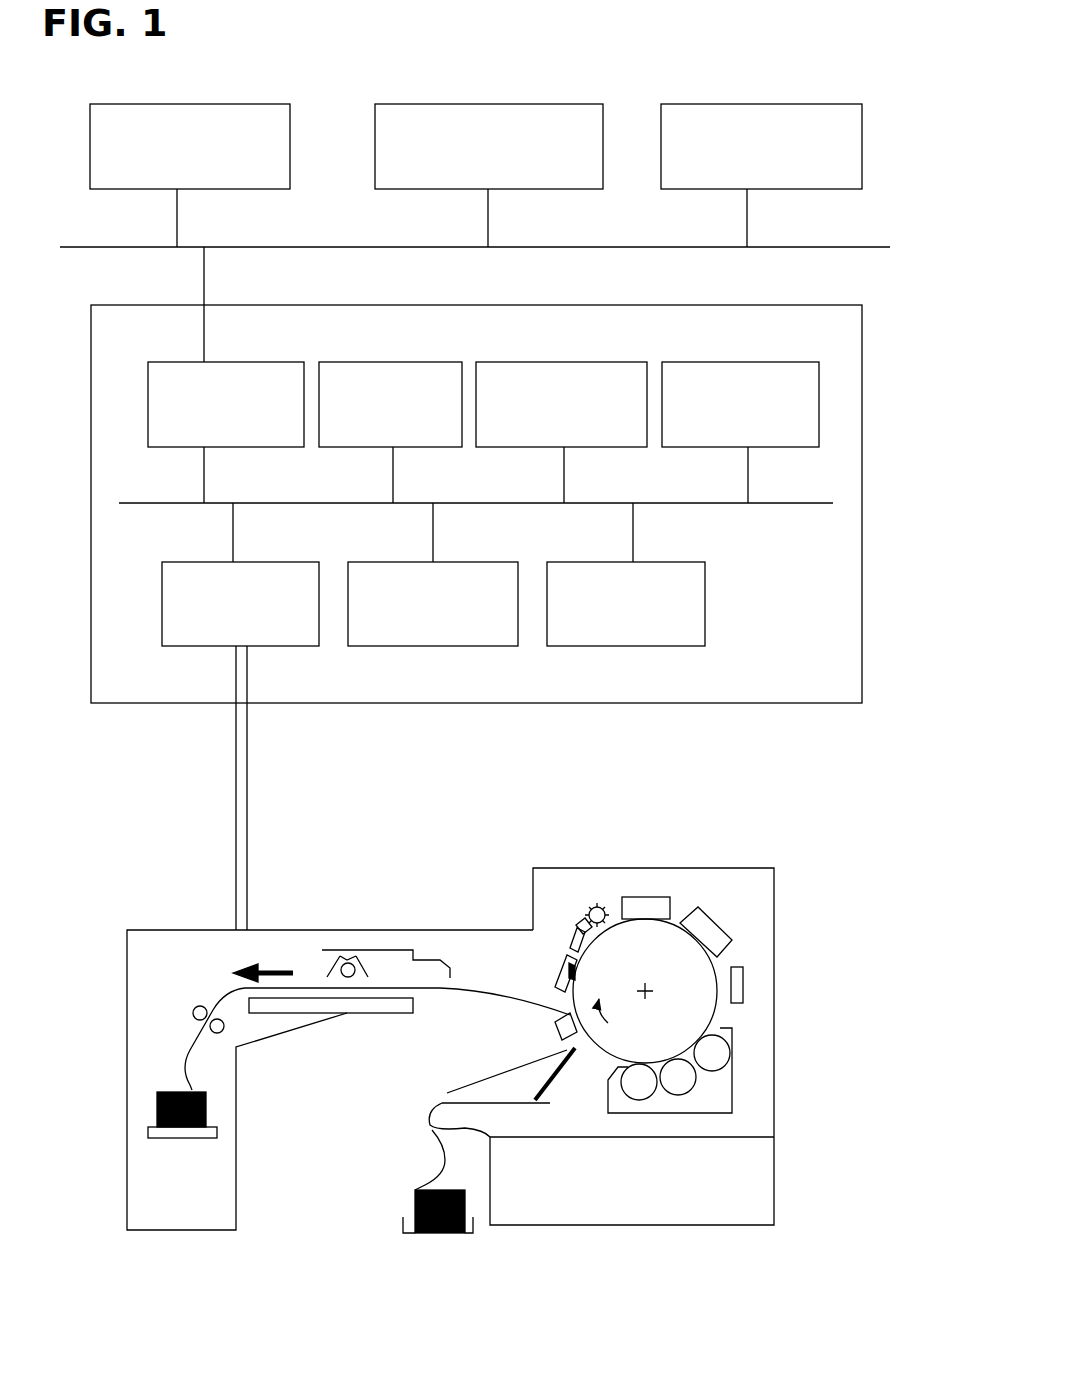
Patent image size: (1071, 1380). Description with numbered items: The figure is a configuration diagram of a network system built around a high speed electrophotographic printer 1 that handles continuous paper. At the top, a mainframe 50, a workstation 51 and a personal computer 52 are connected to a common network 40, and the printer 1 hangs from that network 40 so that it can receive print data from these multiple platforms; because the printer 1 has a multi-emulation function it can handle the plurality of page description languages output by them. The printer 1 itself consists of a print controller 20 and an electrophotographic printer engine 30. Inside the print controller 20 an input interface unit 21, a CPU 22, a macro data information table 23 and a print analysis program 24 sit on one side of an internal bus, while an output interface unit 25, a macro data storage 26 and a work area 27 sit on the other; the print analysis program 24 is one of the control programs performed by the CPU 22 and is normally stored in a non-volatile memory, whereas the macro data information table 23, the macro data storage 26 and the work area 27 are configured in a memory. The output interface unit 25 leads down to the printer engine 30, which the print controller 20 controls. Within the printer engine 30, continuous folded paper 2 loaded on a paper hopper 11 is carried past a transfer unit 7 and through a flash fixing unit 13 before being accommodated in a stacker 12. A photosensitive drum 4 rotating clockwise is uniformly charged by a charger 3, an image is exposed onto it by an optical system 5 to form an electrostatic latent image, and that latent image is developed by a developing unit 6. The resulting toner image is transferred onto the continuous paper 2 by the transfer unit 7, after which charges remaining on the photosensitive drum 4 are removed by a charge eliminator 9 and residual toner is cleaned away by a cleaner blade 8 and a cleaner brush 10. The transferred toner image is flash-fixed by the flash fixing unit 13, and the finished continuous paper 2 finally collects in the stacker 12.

The electrophotographic printer 1 is at (890, 318).
The continuous paper 2 is at (431, 1133).
The charger 3 is at (645, 951).
The photosensitive drum 4 is at (705, 901).
The optical system 5 is at (740, 964).
The developing unit 6 is at (736, 1059).
The transfer unit 7 is at (556, 1033).
The cleaner blade 8 is at (553, 959).
The charge eliminator 9 is at (576, 926).
The cleaner brush 10 is at (588, 897).
The paper hopper 11 is at (405, 1237).
The stacker 12 is at (200, 1140).
The flash fixing unit 13 is at (328, 950).
The print controller 20 is at (833, 483).
The input interface unit 21 is at (232, 362).
The CPU 22 is at (388, 362).
The macro data information table 23 is at (575, 362).
The print analysis program 24 is at (747, 362).
The output interface unit 25 is at (262, 562).
The macro data storage 26 is at (460, 562).
The work area 27 is at (645, 562).
The electrophotographic printer engine 30 is at (775, 892).
The network 40 is at (605, 247).
The mainframe 50 is at (290, 152).
The workstation 51 is at (629, 142).
The personal computer 52 is at (888, 142).